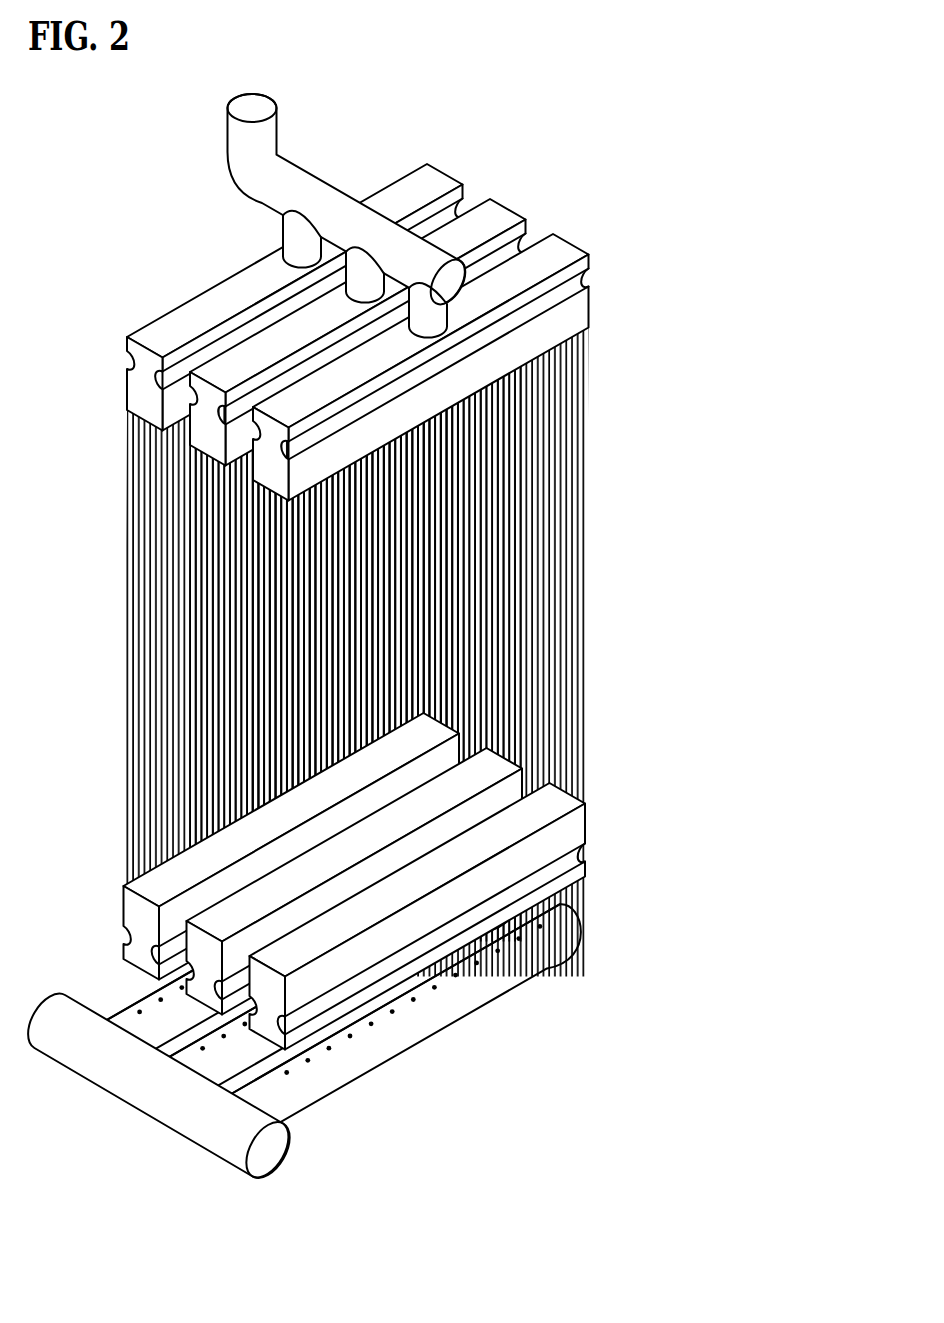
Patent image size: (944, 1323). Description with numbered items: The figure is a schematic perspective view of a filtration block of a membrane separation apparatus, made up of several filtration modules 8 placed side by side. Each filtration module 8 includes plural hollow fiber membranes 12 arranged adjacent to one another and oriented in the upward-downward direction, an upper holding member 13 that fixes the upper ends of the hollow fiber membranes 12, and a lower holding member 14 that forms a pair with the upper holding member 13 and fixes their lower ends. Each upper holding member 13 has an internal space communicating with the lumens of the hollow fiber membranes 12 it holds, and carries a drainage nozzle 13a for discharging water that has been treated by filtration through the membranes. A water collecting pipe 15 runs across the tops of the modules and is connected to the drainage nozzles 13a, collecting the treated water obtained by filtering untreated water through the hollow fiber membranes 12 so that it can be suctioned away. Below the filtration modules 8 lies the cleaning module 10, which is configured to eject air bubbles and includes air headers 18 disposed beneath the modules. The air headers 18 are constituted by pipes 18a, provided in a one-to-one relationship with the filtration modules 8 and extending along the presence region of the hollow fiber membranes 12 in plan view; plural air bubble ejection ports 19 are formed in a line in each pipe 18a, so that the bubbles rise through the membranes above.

The filtration module 8 is at (376, 564).
The cleaning module 10 is at (168, 1163).
The hollow fiber membranes 12 is at (480, 492).
The upper holding member 13 is at (160, 312).
The drainage nozzle 13a is at (414, 325).
The lower holding member 14 is at (594, 822).
The water collecting pipe 15 is at (342, 216).
The air header 18 is at (305, 995).
The pipe 18a is at (112, 1016).
The air bubble ejection port 19 is at (203, 1048).